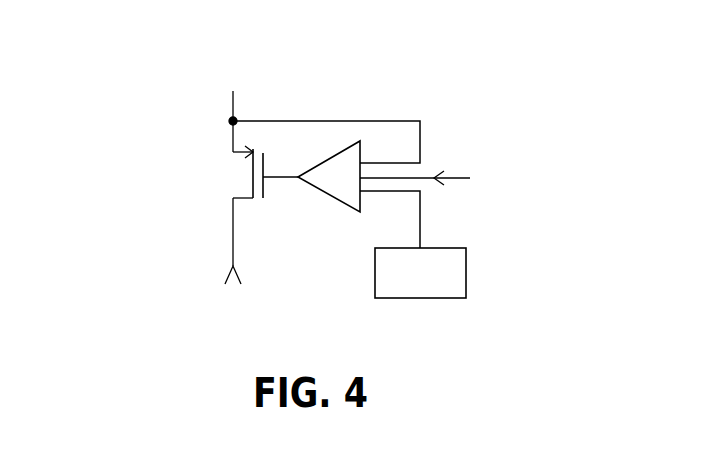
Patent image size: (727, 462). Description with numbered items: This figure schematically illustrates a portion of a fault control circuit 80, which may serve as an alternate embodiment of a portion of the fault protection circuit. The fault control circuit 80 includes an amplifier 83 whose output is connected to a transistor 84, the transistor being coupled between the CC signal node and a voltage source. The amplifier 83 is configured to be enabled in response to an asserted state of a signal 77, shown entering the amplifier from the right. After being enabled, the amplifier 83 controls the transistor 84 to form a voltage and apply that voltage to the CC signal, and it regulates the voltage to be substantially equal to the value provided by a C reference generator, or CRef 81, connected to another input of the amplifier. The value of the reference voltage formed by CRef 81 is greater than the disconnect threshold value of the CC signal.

The fault control circuit 80 is at (109, 58).
The transistor 84 is at (240, 189).
The amplifier 83 is at (335, 197).
The signal 77 is at (450, 179).
The C reference generator 81 is at (466, 253).